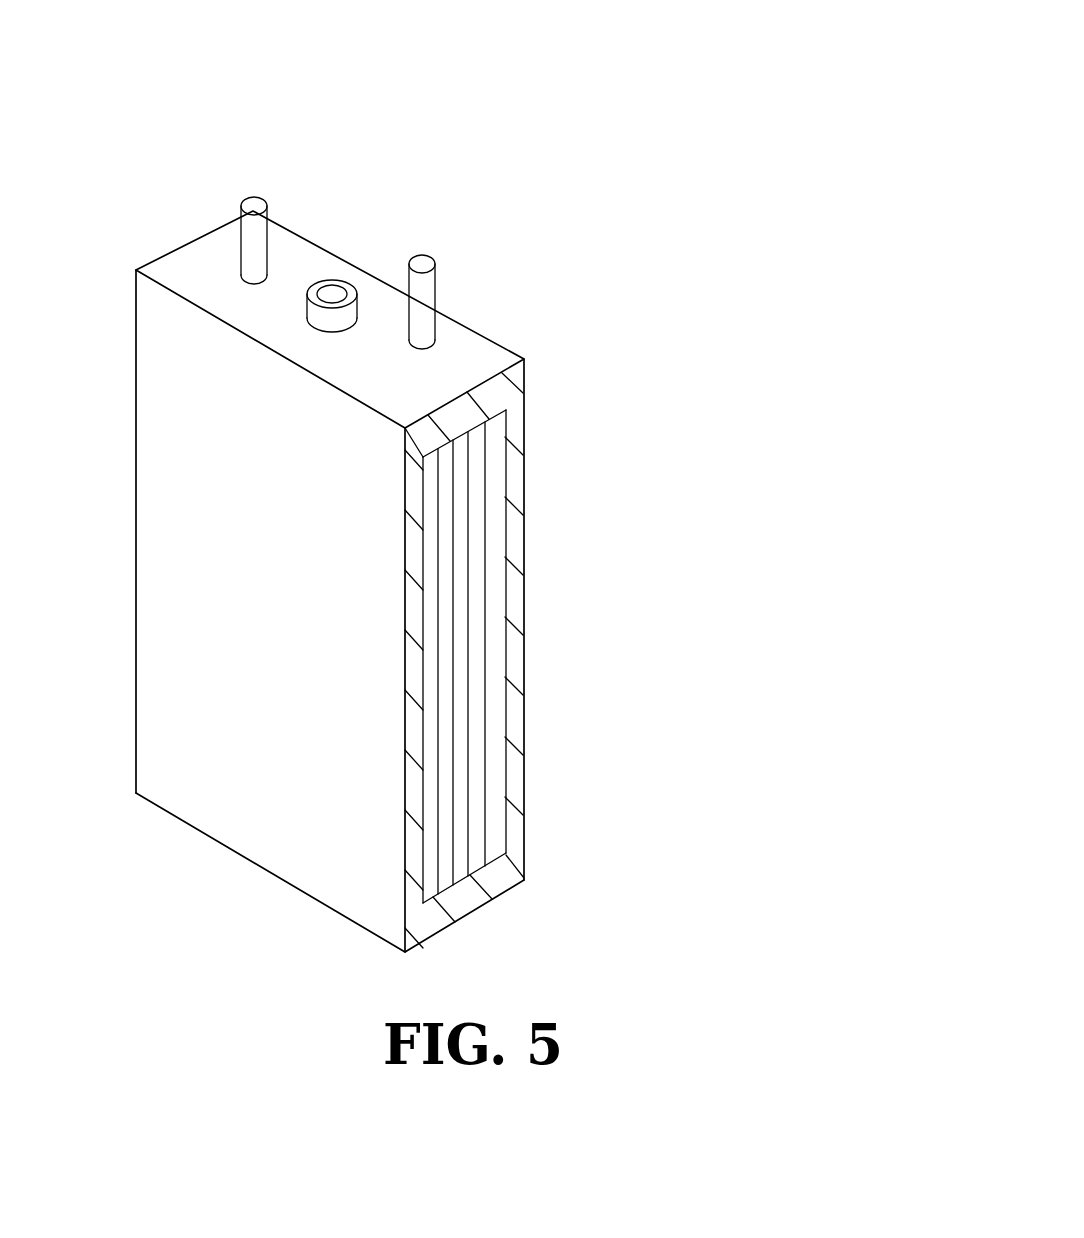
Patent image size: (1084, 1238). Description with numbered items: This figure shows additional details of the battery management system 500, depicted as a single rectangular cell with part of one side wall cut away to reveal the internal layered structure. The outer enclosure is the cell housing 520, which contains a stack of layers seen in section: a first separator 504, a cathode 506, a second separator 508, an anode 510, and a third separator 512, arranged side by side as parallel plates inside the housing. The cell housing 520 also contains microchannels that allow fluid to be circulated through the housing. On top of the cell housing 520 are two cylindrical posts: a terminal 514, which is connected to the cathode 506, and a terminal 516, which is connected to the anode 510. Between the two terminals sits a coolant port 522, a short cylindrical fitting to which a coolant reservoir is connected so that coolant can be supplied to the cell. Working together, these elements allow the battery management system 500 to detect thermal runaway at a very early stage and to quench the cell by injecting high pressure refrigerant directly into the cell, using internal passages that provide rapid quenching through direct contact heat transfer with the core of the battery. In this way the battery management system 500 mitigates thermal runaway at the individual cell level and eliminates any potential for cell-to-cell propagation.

The battery management system 500 is at (444, 488).
The first separator 504 is at (594, 658).
The cathode 506 is at (596, 644).
The second separator 508 is at (562, 654).
The anode 510 is at (448, 728).
The third separator 512 is at (435, 819).
The terminal 514 is at (330, 208).
The terminal 516 is at (514, 300).
The cell housing 520 is at (411, 581).
The coolant port 522 is at (378, 259).